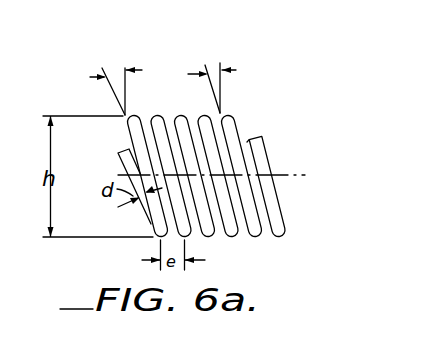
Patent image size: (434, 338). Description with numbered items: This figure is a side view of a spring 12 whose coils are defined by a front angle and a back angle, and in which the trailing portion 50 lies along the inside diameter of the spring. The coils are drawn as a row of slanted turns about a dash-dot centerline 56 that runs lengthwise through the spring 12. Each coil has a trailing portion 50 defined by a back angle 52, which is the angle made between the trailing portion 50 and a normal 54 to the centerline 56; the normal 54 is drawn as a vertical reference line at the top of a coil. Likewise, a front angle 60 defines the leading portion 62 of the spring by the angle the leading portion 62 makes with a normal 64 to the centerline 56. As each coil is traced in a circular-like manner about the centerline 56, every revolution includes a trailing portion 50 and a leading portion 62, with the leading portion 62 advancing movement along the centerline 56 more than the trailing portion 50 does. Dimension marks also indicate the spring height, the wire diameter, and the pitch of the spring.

The spring 12 is at (226, 178).
The trailing portion 50 is at (262, 147).
The back angle 52 is at (228, 50).
The normal 54 is at (222, 90).
The centerline 56 is at (303, 172).
The front angle 60 is at (112, 70).
The leading portion 62 is at (258, 188).
The normal 64 is at (126, 90).